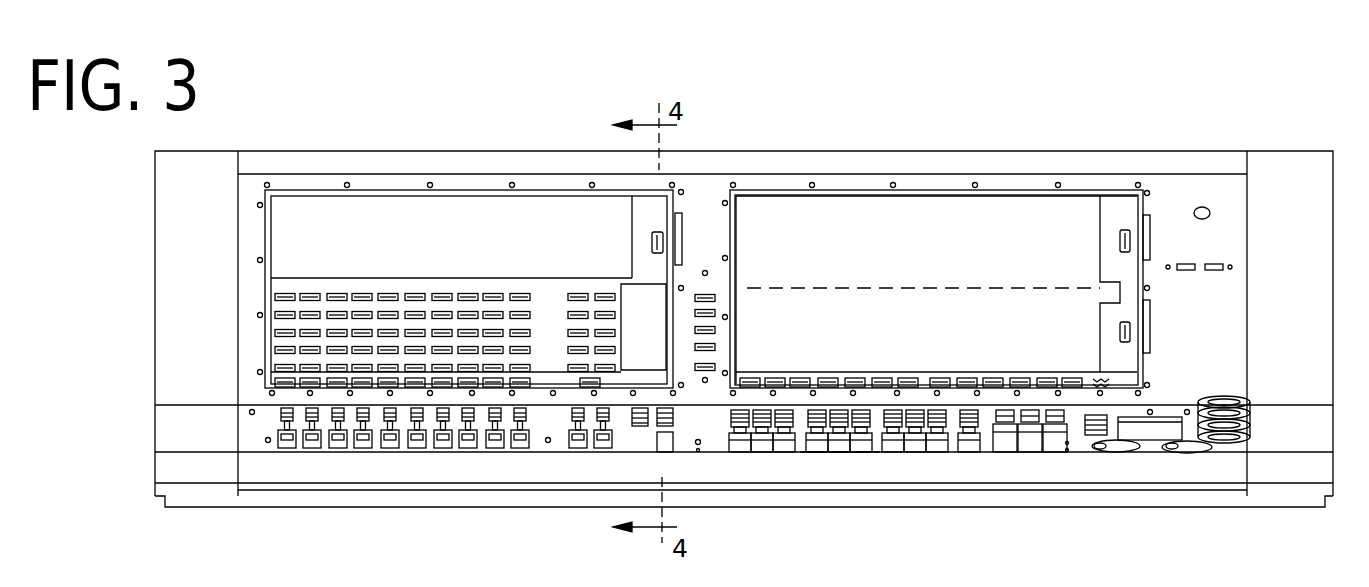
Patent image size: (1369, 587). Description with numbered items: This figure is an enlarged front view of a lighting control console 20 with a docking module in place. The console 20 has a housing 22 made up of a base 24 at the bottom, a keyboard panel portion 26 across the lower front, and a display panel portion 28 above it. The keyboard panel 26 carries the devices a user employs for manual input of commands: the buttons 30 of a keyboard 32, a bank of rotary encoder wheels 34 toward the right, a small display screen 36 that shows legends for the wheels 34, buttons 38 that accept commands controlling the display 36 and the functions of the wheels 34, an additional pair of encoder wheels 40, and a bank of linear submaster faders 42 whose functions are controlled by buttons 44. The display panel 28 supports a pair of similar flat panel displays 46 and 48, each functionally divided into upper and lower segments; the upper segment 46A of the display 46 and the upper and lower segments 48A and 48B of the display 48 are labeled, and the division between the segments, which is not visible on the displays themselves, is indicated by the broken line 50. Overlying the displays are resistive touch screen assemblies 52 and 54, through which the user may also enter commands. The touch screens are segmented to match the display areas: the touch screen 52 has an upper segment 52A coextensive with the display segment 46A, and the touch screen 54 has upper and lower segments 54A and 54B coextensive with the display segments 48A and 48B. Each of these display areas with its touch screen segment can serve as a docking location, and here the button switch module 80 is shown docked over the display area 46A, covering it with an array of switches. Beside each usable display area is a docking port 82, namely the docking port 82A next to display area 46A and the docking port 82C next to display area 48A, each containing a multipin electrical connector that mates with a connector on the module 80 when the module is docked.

The console 20 is at (1240, 125).
The housing 22 is at (168, 398).
The base 24 is at (200, 472).
The keyboard panel portion 26 is at (262, 425).
The display panel portion 28 is at (1178, 188).
The buttons 30 is at (973, 452).
The keyboard 32 is at (853, 470).
The encoder wheels 34 is at (1252, 426).
The display screen 36 is at (1147, 428).
The buttons 38 is at (1103, 436).
The encoder wheels 40 is at (668, 455).
The submaster faders 42 is at (523, 449).
The buttons 44 is at (395, 449).
The display 46 is at (476, 241).
The upper segment 46A is at (435, 248).
The display 48 is at (936, 246).
The upper segment 48A is at (925, 249).
The lower segment 48B is at (930, 324).
The broken line 50 is at (1053, 289).
The touch screen assembly 52 is at (288, 265).
The upper segment 52A is at (331, 228).
The touch screen assembly 54 is at (1063, 346).
The upper segment 54A is at (823, 215).
The lower segment 54B is at (763, 305).
The button switch module 80 is at (278, 342).
The docking port 82 is at (1132, 336).
The docking port 82A is at (662, 231).
The docking port 82C is at (1122, 230).